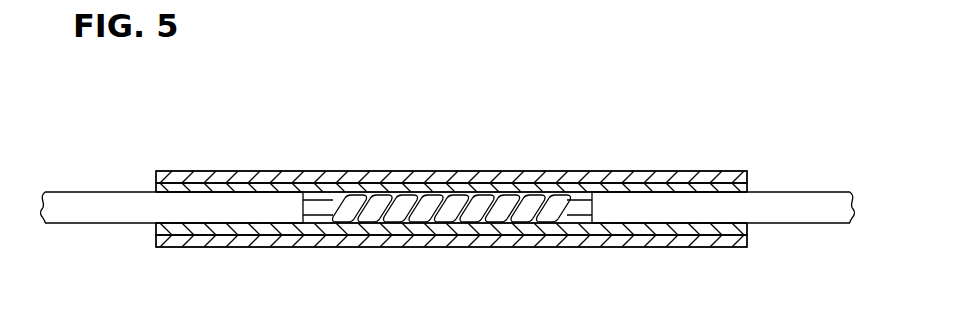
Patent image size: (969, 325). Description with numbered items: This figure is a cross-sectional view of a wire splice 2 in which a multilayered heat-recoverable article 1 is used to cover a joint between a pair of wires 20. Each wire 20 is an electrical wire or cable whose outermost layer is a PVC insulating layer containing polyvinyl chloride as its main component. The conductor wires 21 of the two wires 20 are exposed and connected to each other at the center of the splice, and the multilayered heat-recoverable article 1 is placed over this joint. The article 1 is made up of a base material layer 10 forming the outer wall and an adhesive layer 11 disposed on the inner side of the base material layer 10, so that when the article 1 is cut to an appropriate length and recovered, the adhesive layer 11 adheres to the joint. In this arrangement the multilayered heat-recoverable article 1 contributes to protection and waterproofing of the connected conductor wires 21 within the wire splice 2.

The multilayered heat-recoverable article 1 is at (451, 165).
The wire splice 2 is at (451, 165).
The base material layer 10 is at (413, 178).
The adhesive layer 11 is at (323, 197).
The wire 20 is at (92, 200).
The conductor wire 21 is at (327, 208).